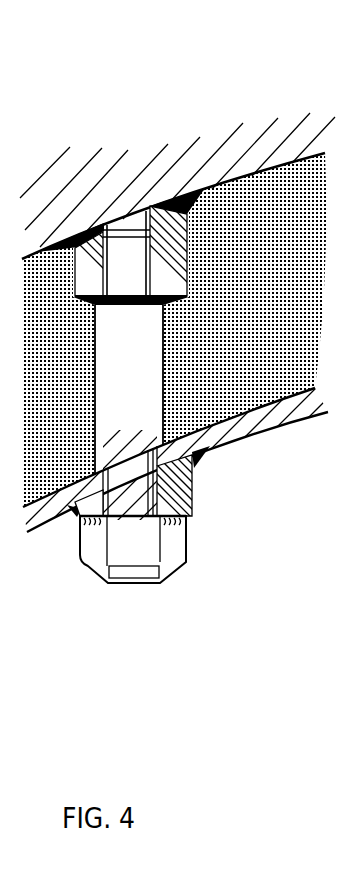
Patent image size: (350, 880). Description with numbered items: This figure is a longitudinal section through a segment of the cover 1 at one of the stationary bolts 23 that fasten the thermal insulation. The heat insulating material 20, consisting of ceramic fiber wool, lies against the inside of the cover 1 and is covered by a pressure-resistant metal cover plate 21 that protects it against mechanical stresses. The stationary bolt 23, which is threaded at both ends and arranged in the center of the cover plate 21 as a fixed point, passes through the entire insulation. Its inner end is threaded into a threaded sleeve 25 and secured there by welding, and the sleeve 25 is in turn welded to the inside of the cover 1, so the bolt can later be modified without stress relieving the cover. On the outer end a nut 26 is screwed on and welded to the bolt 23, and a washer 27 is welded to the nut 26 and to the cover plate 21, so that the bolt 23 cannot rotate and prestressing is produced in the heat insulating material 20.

The cover 1 is at (289, 149).
The heat insulating material 20 is at (231, 257).
The cover plate 21 is at (233, 425).
The stationary bolt 23 is at (131, 425).
The threaded sleeve 25 is at (167, 253).
The nut 26 is at (97, 548).
The washer 27 is at (175, 495).